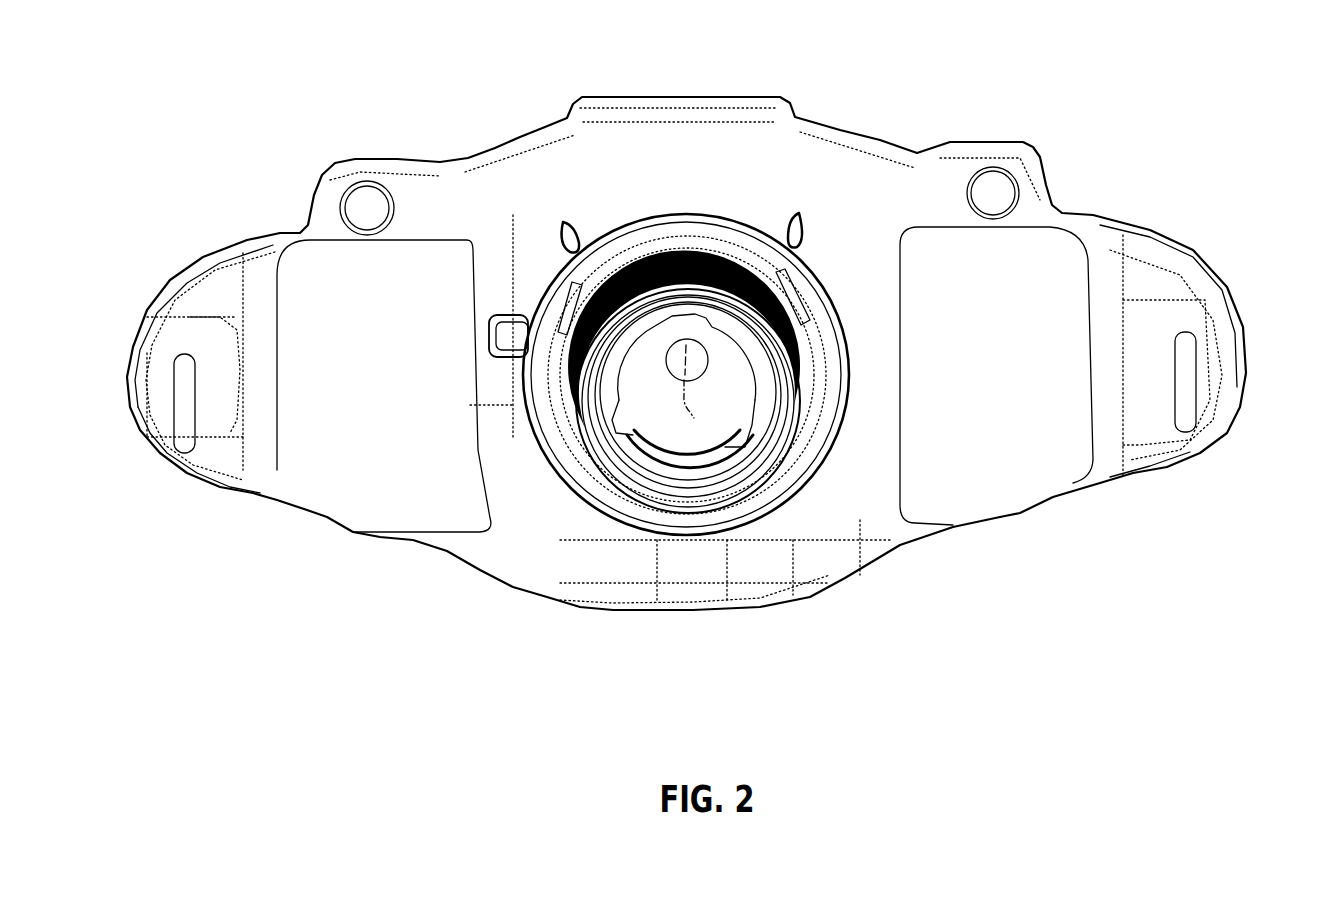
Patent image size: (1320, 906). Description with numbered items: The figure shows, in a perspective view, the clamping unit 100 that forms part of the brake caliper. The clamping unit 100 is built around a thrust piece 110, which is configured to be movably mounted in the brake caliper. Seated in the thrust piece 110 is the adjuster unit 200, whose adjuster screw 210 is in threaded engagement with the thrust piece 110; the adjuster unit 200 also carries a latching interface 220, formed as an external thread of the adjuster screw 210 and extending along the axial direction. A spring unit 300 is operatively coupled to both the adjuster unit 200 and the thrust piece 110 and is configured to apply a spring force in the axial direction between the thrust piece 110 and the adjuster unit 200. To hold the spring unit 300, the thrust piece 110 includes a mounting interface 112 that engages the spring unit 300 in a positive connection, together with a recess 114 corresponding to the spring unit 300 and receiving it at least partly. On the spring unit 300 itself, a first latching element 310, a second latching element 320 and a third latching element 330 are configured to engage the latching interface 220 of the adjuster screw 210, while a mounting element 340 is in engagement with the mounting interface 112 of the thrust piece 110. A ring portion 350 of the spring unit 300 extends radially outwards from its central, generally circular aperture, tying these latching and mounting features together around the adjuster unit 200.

The clamping unit 100 is at (923, 180).
The thrust piece 110 is at (590, 128).
The mounting interface 112 is at (453, 240).
The recess 114 is at (713, 533).
The adjuster unit 200 is at (653, 466).
The adjuster screw 210 is at (713, 468).
The latching interface 220 is at (698, 267).
The spring unit 300 is at (740, 242).
The first latching element 310 is at (555, 397).
The second latching element 320 is at (608, 267).
The third latching element 330 is at (800, 400).
The mounting element 340 is at (520, 328).
The ring portion 350 is at (830, 377).